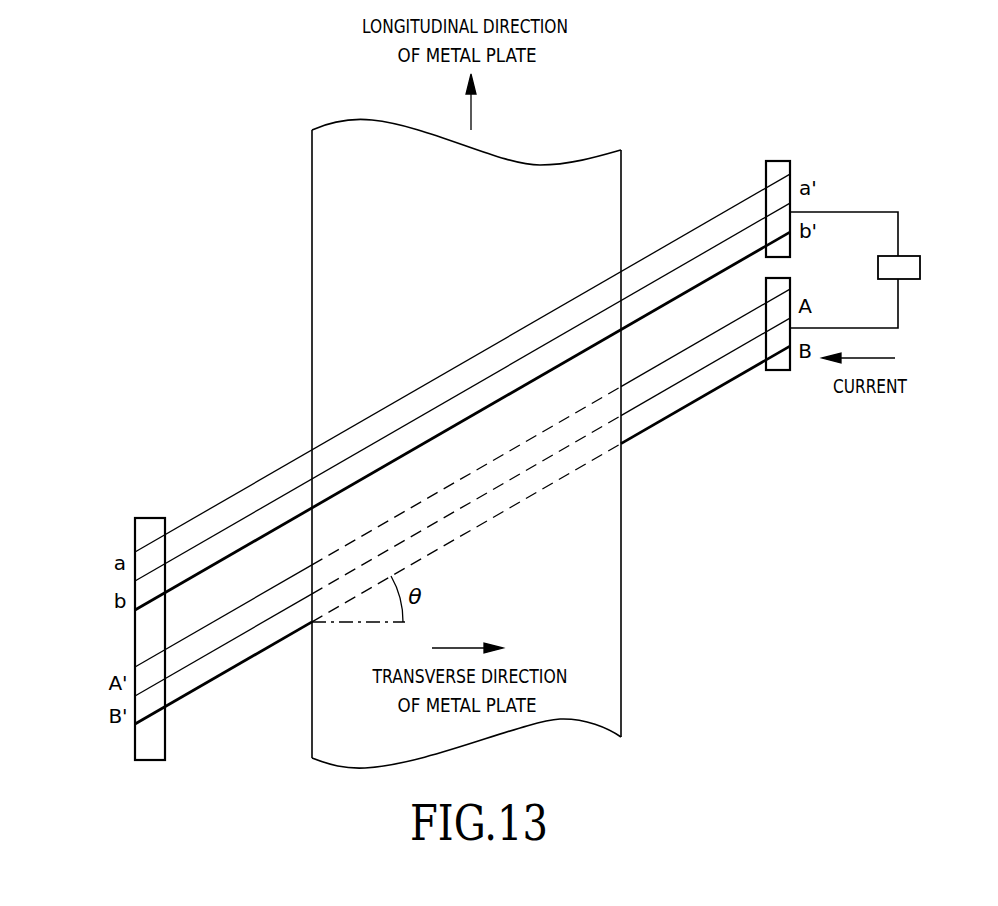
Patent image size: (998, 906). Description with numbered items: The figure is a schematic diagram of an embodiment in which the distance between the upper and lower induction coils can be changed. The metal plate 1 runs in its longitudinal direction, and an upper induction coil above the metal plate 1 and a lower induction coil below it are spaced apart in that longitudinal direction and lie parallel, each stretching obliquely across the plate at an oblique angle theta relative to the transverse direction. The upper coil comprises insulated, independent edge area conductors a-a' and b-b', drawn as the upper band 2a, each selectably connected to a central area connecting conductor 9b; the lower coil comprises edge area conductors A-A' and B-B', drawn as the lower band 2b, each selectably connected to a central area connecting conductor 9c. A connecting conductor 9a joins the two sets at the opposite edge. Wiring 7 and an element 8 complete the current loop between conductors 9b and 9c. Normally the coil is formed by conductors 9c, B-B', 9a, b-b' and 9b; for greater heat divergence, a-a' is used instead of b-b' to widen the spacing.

The metal plate 1 is at (552, 181).
The first set of current/voltage probe lines 2a is at (410, 407).
The second set of current/voltage probe lines 2b is at (703, 396).
The current supply circuit wiring 7 is at (865, 212).
The current source (resistor) 8 is at (913, 266).
The connecting conductor 9a is at (135, 638).
The central area connecting conductor 9b is at (777, 163).
The central area connecting conductor 9c is at (780, 367).